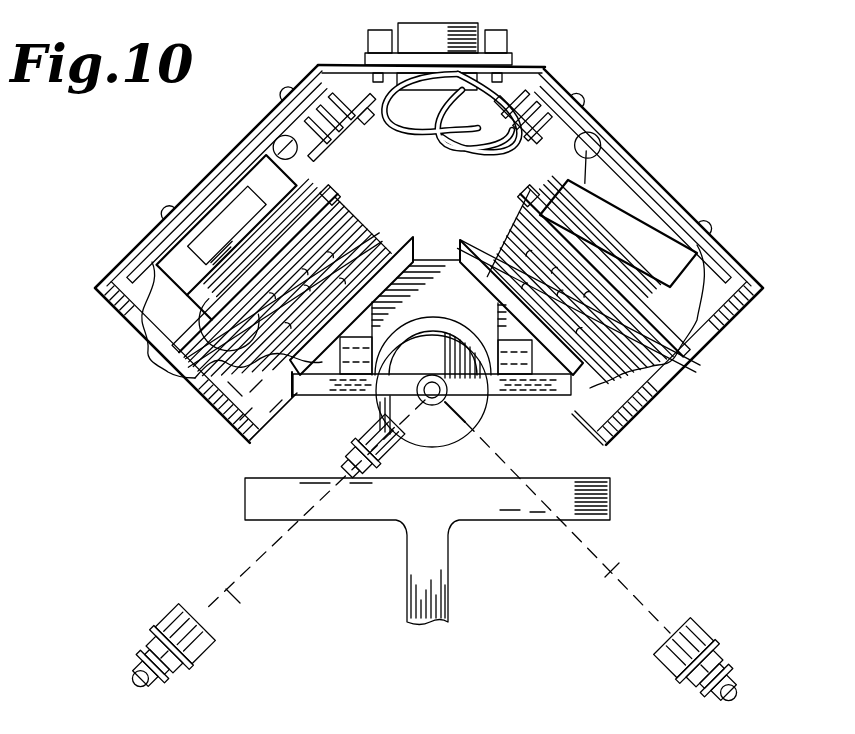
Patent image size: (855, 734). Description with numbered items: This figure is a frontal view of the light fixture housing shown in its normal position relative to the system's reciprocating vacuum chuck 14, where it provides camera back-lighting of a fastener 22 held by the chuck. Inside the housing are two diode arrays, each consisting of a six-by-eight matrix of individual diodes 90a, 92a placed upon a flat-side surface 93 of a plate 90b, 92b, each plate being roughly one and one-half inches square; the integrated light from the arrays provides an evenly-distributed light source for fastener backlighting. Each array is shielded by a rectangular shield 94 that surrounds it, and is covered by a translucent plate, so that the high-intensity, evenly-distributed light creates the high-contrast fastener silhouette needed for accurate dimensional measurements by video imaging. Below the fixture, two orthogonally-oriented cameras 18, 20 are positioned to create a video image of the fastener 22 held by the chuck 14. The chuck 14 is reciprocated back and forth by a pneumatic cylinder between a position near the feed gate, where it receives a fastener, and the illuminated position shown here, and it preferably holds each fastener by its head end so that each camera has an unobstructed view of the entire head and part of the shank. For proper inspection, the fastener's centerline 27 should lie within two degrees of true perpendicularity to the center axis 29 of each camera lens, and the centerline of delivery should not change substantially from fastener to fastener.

The reciprocating vacuum chuck 14 is at (447, 432).
The camera 18 is at (728, 668).
The camera 20 is at (170, 615).
The fastener 22 is at (447, 393).
The fastener centerline 27 is at (418, 388).
The center axis of camera lens 29 is at (236, 598).
The individual diodes 90a is at (215, 404).
The plate 90b is at (292, 186).
The individual diodes 92a is at (668, 364).
The plate 92b is at (740, 250).
The flat-side surface 93 is at (152, 262).
The rectangular shield 94 is at (195, 378).